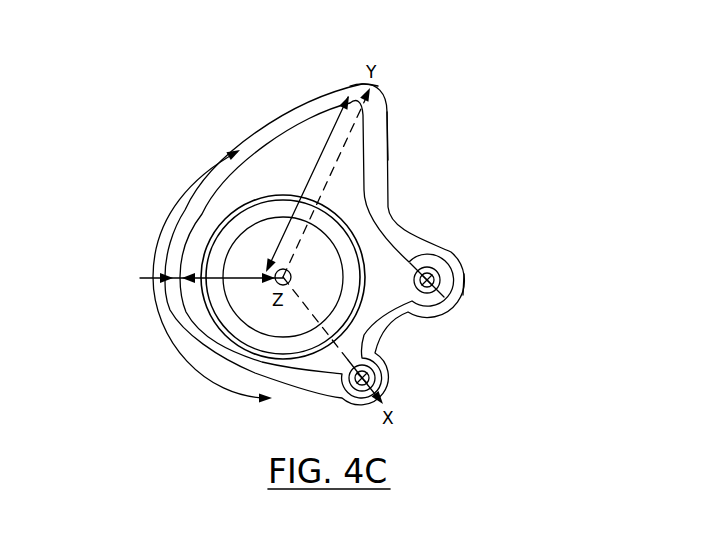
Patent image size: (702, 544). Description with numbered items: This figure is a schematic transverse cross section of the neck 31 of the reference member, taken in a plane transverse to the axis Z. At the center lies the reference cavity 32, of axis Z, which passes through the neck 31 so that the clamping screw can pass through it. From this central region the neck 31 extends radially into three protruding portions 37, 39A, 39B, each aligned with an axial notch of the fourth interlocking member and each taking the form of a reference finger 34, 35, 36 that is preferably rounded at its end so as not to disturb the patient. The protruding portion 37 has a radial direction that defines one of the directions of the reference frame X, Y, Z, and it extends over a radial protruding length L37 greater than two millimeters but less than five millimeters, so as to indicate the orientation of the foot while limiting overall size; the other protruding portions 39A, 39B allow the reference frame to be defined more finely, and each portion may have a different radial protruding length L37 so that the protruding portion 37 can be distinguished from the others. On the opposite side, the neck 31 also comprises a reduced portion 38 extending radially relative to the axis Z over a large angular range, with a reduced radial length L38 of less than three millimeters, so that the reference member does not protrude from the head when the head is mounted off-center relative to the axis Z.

The neck 31 is at (164, 121).
The reference cavity 32 is at (332, 277).
The reference finger 34 is at (388, 88).
The reference finger 35 is at (462, 297).
The reference finger 36 is at (392, 392).
The protruding portion 37 is at (398, 105).
The reduced portion 38 is at (152, 278).
The protruding portion 39A is at (406, 410).
The protruding portion 39B is at (470, 304).
The radial protruding length L37 is at (332, 111).
The reduced radial length L38 is at (220, 288).